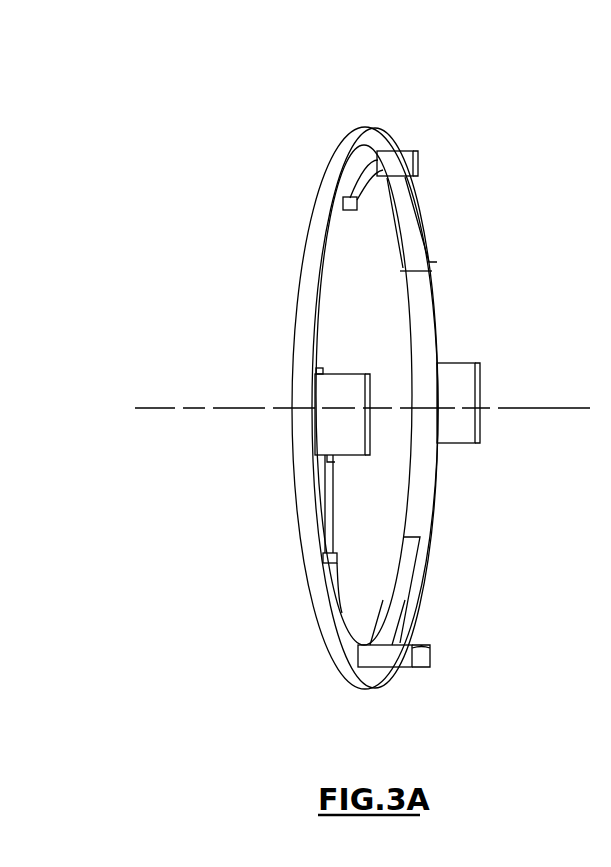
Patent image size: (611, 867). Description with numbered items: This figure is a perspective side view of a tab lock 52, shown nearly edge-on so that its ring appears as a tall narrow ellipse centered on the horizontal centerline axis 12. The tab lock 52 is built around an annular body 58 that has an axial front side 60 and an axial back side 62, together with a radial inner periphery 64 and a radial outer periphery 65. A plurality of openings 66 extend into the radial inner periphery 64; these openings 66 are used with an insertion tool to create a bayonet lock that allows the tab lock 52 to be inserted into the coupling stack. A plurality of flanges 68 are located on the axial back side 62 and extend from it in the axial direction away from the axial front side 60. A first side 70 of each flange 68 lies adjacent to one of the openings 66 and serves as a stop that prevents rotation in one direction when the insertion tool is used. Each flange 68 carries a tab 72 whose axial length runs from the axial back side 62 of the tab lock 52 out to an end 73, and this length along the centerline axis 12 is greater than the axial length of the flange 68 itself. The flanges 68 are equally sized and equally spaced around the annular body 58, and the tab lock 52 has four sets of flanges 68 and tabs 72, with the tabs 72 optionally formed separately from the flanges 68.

The centerline axis 12 is at (183, 409).
The tab lock 52 is at (450, 217).
The annular body 58 is at (422, 318).
The axial front side 60 is at (316, 664).
The axial back side 62 is at (430, 515).
The radial inner periphery 64 is at (419, 492).
The radial outer periphery 65 is at (378, 692).
The openings 66 is at (398, 233).
The flanges 68 is at (356, 177).
The first side 70 is at (336, 572).
The tab 72 is at (341, 418).
The end 73 is at (433, 157).